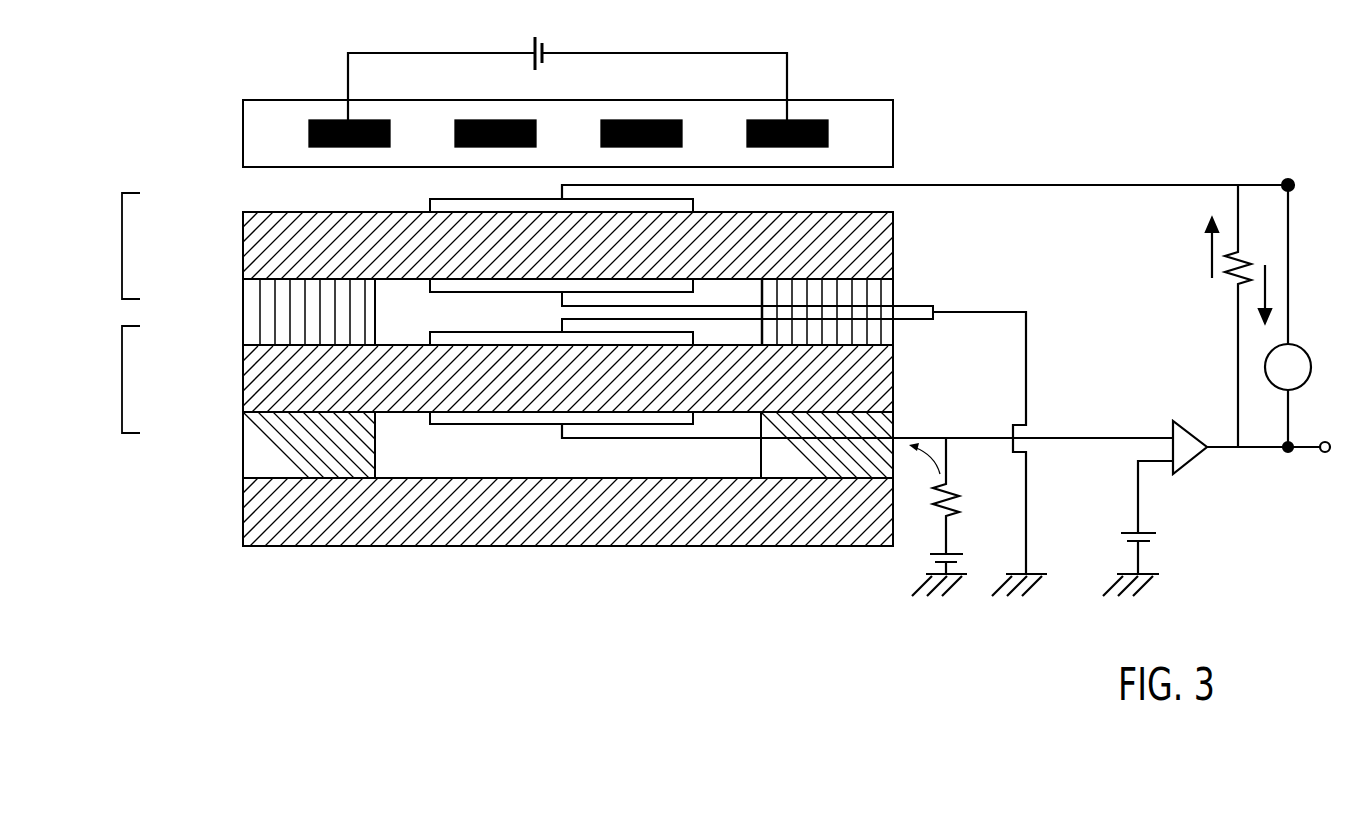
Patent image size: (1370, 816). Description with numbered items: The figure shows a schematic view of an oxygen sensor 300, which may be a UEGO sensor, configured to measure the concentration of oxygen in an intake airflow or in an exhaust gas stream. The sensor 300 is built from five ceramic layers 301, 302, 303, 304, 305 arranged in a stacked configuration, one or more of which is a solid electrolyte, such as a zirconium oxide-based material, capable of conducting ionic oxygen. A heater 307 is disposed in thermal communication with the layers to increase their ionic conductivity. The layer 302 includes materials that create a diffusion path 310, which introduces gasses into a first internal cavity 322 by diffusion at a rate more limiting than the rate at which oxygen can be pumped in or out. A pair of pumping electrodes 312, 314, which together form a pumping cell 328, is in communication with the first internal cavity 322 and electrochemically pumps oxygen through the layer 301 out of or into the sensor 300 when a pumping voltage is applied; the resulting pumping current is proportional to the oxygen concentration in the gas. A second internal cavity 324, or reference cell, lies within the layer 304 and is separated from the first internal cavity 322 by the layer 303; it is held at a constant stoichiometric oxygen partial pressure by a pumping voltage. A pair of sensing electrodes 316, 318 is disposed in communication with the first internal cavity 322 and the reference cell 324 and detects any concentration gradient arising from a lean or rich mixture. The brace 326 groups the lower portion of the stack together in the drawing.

The oxygen sensor 300 is at (887, 45).
The ceramic layer 301 is at (243, 223).
The ceramic layer 302 is at (243, 290).
The ceramic layer 303 is at (243, 400).
The ceramic layer 304 is at (243, 467).
The ceramic layer 305 is at (243, 533).
The heater 307 is at (309, 124).
The diffusion path 310 is at (275, 327).
The pumping electrode 312 is at (431, 200).
The pumping electrode 314 is at (431, 292).
The sensing electrode 316 is at (431, 333).
The sensing electrode 318 is at (431, 424).
The first internal cavity 322 is at (522, 321).
The second internal cavity 324 is at (522, 459).
The lower sensor portion 326 is at (122, 392).
The pumping cell 328 is at (122, 262).